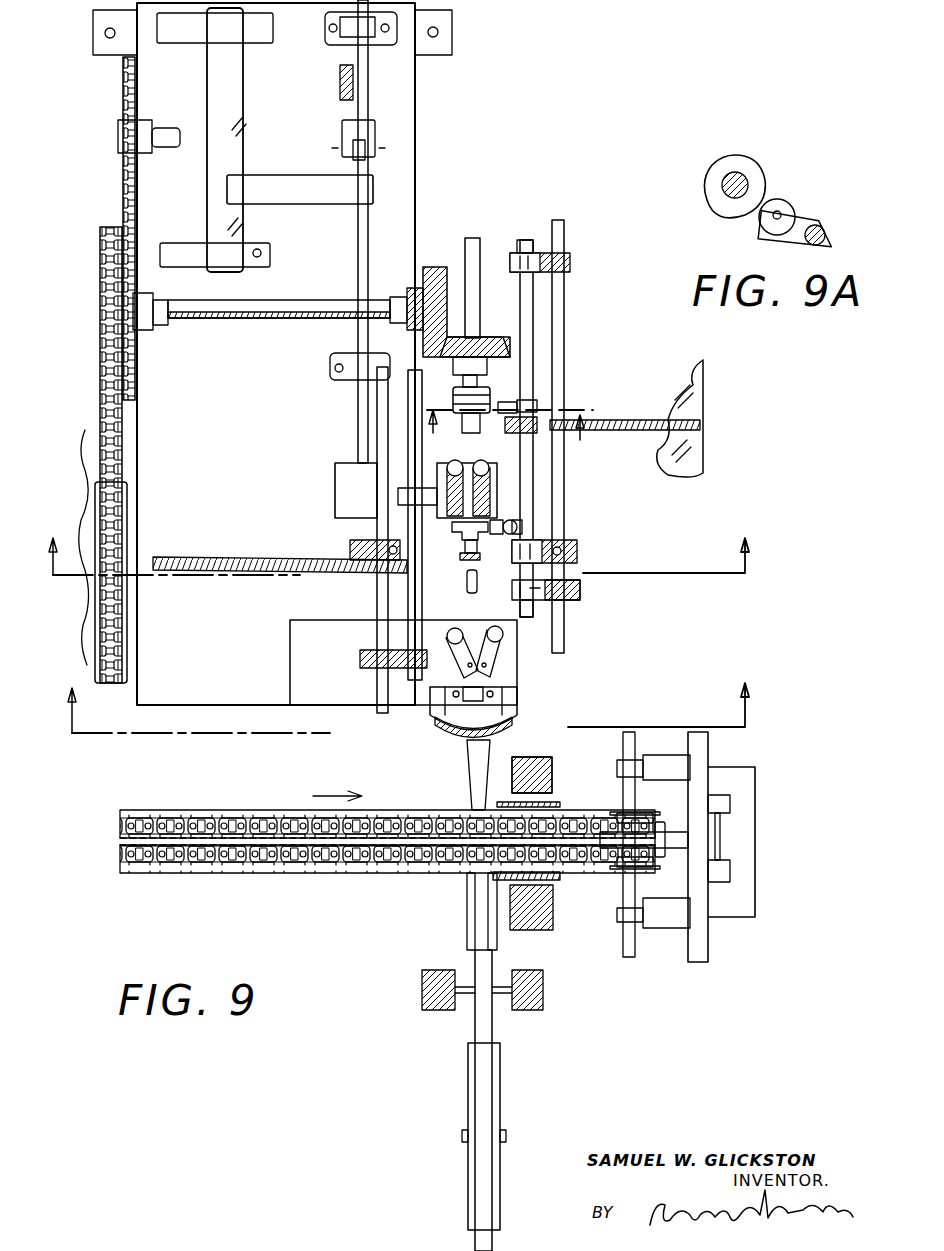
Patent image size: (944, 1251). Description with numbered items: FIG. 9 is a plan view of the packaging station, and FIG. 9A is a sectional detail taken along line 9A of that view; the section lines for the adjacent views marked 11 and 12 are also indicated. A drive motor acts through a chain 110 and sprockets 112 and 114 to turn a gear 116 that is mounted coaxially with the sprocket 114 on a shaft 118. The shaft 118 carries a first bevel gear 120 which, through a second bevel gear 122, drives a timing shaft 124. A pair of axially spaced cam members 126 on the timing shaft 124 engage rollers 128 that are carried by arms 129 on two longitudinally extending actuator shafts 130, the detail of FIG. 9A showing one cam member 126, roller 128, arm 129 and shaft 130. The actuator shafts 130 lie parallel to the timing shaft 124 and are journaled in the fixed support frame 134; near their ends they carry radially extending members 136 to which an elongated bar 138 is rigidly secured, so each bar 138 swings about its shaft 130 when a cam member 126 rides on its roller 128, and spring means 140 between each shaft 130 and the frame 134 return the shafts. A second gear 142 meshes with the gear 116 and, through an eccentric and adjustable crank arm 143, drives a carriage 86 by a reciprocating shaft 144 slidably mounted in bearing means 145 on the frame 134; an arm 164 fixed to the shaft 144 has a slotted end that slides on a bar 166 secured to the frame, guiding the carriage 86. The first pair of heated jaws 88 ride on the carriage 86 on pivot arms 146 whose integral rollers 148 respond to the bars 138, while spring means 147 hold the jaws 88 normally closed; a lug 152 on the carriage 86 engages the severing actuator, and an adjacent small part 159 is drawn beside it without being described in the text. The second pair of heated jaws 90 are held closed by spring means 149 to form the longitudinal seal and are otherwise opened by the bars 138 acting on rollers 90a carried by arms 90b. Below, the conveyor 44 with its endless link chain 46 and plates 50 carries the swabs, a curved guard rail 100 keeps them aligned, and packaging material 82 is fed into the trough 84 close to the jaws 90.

In FIG. 9, the bar 166 is at (232, 108).
In FIG. 9, the arm 164 is at (268, 176).
In FIG. 9, the eccentric and adjustable crank arm 143 is at (353, 82).
In FIG. 9, the reciprocating shaft 144 is at (358, 266).
In FIG. 9, the bearing means 145 is at (332, 356).
In FIG. 9, the carriage 86 is at (350, 492).
In FIG. 9, the elongated bar 138 is at (377, 435).
In FIG. 9, the actuator shaft 130 is at (417, 417).
In FIG. 9A, the actuator shaft 130 is at (822, 228).
In FIG. 9, the radially extending member 136 is at (362, 660).
In FIG. 9, the gear 116 is at (135, 392).
In FIG. 9, the second gear 142 is at (120, 187).
In FIG. 9, the sprocket 114 is at (105, 325).
In FIG. 9, the shaft 118 is at (183, 317).
In FIG. 9, the chain 110 is at (107, 476).
In FIG. 9, the sprocket 112 is at (103, 663).
In FIG. 9, the fixed support frame 134 is at (727, 445).
In FIG. 9, the spring means 140 is at (178, 555).
In FIG. 9, the section line 12 is at (398, 540).
In FIG. 9, the section line 11 is at (409, 707).
In FIG. 9, the first bevel gear 120 is at (430, 270).
In FIG. 9, the timing shaft 124 is at (470, 240).
In FIG. 9A, the timing shaft 124 is at (735, 172).
In FIG. 9, the second bevel gear 122 is at (500, 328).
In FIG. 9, the cam member 126 is at (453, 400).
In FIG. 9A, the cam member 126 is at (752, 158).
In FIG. 9, the section line 9A is at (517, 434).
In FIG. 9, the roller 128 is at (508, 400).
In FIG. 9A, the roller 128 is at (780, 200).
In FIG. 9, the arm 129 is at (535, 407).
In FIG. 9A, the arm 129 is at (805, 215).
In FIG. 9, the pivot arm 146 is at (498, 485).
In FIG. 9, the roller 148 is at (452, 466).
In FIG. 9, the lug 152 is at (510, 523).
In FIG. 9, the pin 159 is at (518, 528).
In FIG. 9, the first pair of heated jaws 88 is at (460, 552).
In FIG. 9, the spring means 147 is at (478, 560).
In FIG. 9, the roller 90a is at (465, 627).
In FIG. 9, the arm 90b is at (460, 660).
In FIG. 9, the second pair of heated jaws 90 is at (480, 745).
In FIG. 9, the spring means 149 is at (455, 733).
In FIG. 9, the conveyor 44 is at (283, 885).
In FIG. 9, the endless link chain 46 is at (127, 843).
In FIG. 9, the plate 50 is at (205, 870).
In FIG. 9, the trough 84 is at (466, 905).
In FIG. 9, the packaging material 82 is at (478, 962).
In FIG. 9, the curved guard rail 100 is at (650, 840).